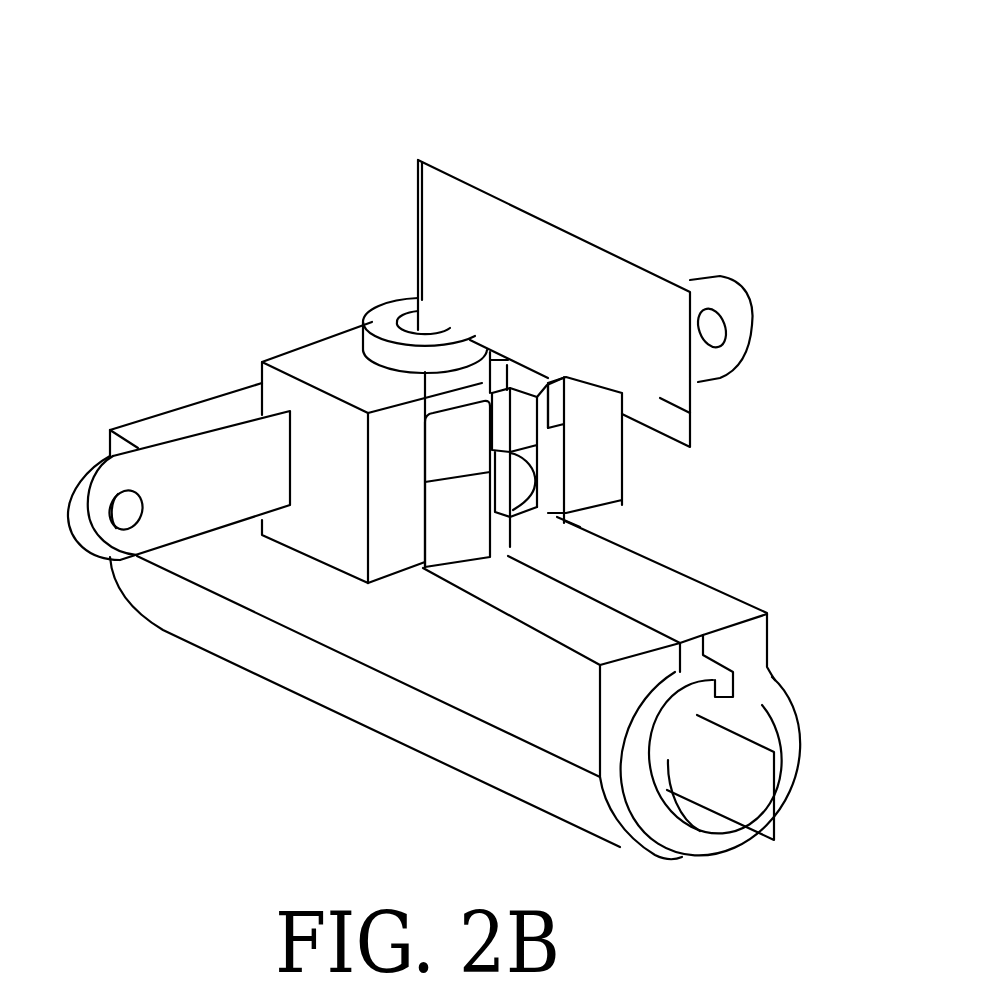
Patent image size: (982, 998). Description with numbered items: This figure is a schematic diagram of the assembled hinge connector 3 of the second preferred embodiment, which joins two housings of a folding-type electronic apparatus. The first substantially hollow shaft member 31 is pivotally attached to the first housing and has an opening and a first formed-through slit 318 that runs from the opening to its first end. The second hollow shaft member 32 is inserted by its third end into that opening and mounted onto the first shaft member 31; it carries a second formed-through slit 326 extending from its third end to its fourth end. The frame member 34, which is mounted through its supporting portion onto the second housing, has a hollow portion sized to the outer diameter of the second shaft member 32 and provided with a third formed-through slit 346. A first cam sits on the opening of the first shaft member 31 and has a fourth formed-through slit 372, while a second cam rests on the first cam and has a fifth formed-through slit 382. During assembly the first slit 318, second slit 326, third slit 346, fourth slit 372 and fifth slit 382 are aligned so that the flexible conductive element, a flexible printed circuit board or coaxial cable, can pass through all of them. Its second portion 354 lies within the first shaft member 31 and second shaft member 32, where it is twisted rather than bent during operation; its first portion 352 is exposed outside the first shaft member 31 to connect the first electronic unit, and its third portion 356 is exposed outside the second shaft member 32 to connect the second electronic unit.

The hinge connector 3 is at (455, 113).
The first substantially hollow shaft member 31 is at (661, 587).
The second hollow shaft member 32 is at (380, 318).
The frame member 34 is at (280, 386).
The first formed-through slit 318 is at (580, 582).
The second formed-through slit 326 is at (487, 486).
The third formed-through slit 346 is at (508, 365).
The first portion 352 is at (750, 767).
The second portion 354 is at (410, 333).
The third portion 356 is at (697, 417).
The fourth formed-through slit 372 is at (490, 533).
The fifth formed-through slit 382 is at (500, 421).